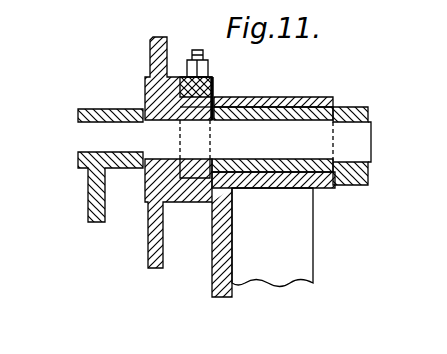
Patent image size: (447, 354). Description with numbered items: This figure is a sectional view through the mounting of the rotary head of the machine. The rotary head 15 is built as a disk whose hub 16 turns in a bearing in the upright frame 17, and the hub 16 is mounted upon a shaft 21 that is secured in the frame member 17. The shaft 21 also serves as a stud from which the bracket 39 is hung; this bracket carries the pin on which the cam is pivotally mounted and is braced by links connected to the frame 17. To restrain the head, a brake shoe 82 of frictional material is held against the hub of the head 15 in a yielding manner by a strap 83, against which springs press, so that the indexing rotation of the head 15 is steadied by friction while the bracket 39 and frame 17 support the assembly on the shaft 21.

The bracket 39 is at (88, 207).
The rotary head 15 is at (147, 257).
The hub 16 is at (197, 182).
The upright frame 17 is at (222, 273).
The shaft 21 is at (328, 137).
The brake shoe 82 is at (217, 122).
The strap 83 is at (213, 78).